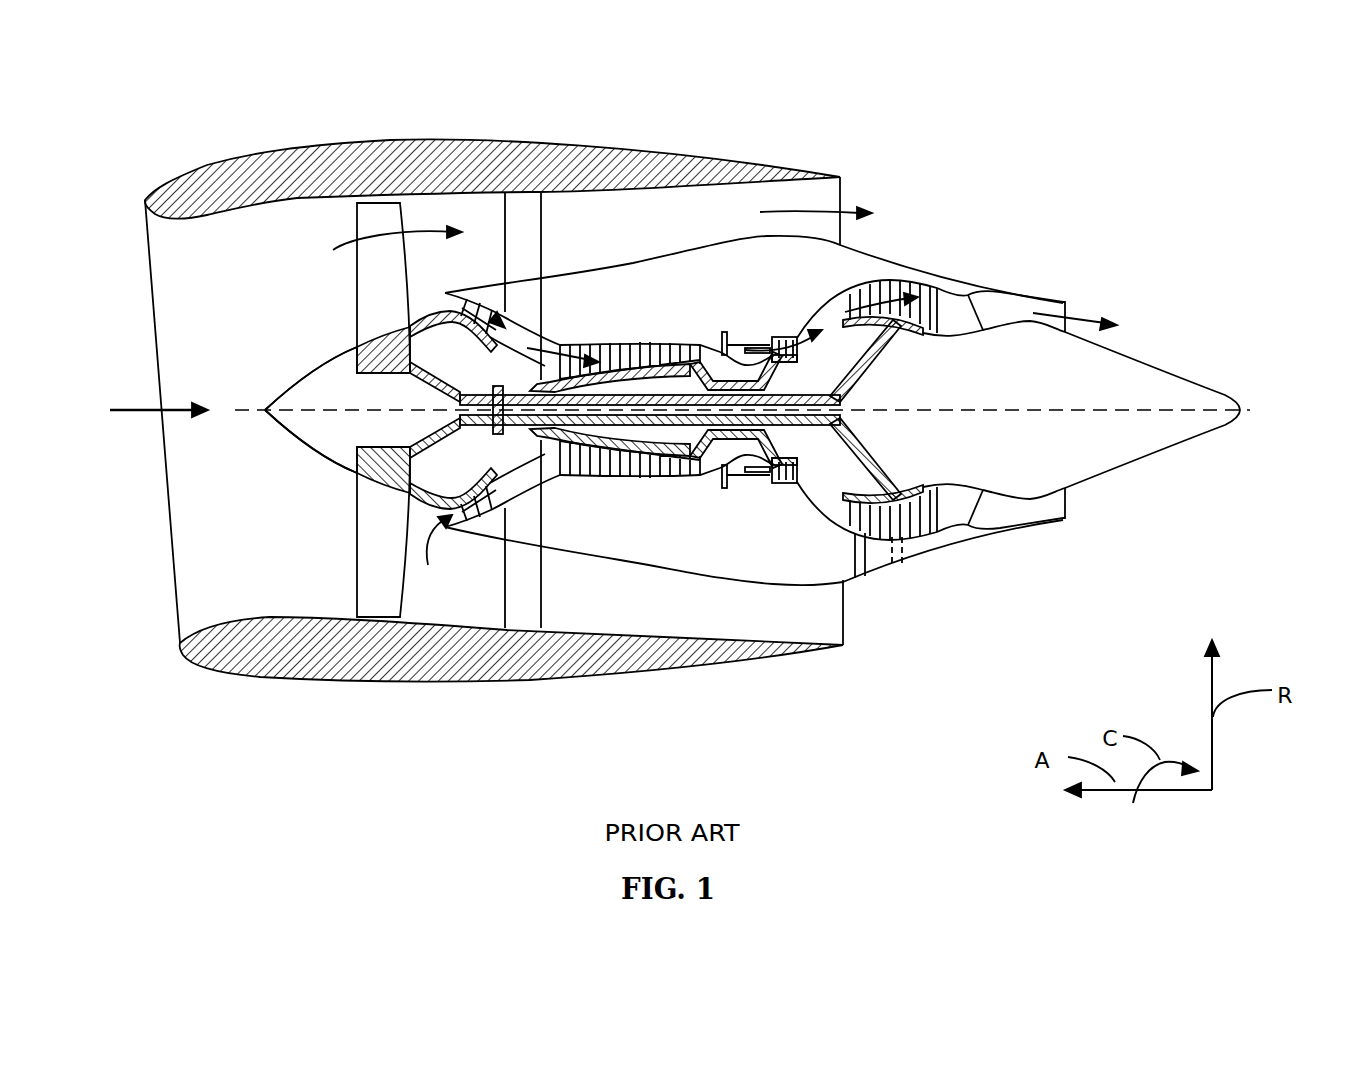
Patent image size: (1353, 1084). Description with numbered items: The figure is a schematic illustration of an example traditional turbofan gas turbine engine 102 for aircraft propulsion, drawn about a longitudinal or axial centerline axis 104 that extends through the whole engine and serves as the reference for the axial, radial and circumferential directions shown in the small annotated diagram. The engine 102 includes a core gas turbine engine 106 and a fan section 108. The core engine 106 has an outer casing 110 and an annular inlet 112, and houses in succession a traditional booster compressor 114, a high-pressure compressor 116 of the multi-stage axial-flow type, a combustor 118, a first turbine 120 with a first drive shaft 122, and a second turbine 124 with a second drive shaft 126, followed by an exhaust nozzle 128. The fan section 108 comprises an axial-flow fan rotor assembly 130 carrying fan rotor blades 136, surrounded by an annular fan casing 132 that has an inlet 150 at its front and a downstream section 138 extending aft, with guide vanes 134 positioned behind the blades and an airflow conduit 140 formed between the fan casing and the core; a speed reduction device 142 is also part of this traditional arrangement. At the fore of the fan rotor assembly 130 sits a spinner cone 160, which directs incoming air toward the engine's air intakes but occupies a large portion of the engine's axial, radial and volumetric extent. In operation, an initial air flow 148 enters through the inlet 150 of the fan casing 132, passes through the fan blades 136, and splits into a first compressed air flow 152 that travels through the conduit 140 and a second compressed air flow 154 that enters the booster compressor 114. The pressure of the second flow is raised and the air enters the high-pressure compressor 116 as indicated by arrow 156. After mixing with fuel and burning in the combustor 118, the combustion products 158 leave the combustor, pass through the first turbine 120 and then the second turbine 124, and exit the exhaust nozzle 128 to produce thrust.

The traditional turbofan gas turbine engine 102 is at (980, 154).
The longitudinal or axial centerline axis 104 is at (1017, 410).
The core gas turbine engine 106 is at (703, 290).
The fan section 108 is at (396, 133).
The outer casing 110 is at (688, 572).
The annular inlet 112 is at (447, 544).
The traditional booster compressor 114 is at (507, 483).
The high-pressure compressor 116 is at (573, 470).
The combustor 118 is at (748, 478).
The first turbine 120 is at (822, 473).
The first drive shaft 122 is at (745, 380).
The second turbine 124 is at (923, 540).
The second drive shaft 126 is at (520, 400).
The exhaust nozzle 128 is at (1068, 307).
The axial-flow fan rotor assembly 130 is at (335, 354).
The annular fan casing 132 is at (400, 680).
The guide vanes 134 is at (543, 213).
The fan rotor blades 136 is at (357, 535).
The downstream section 138 is at (746, 156).
The airflow conduit 140 is at (650, 221).
The speed reduction device 142 is at (500, 443).
The initial air flow 148 is at (170, 410).
The inlet 150 is at (177, 617).
The first compressed air flow 152 is at (370, 237).
The second compressed air flow 154 is at (430, 303).
The compressed air flow into high-pressure compressor 156 is at (566, 345).
The combustion products 158 is at (790, 340).
The spinner cone 160 is at (300, 370).